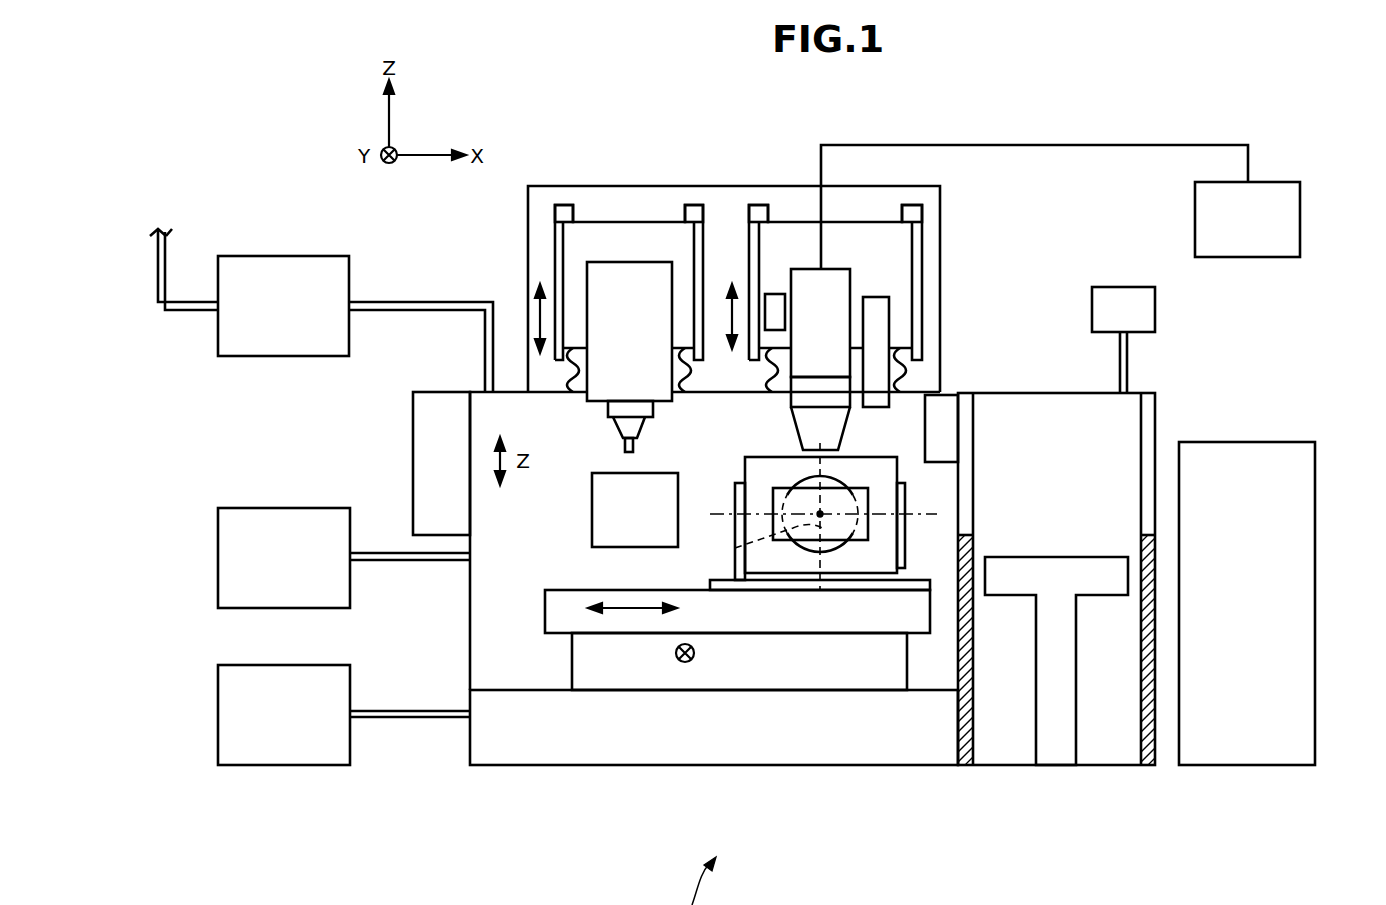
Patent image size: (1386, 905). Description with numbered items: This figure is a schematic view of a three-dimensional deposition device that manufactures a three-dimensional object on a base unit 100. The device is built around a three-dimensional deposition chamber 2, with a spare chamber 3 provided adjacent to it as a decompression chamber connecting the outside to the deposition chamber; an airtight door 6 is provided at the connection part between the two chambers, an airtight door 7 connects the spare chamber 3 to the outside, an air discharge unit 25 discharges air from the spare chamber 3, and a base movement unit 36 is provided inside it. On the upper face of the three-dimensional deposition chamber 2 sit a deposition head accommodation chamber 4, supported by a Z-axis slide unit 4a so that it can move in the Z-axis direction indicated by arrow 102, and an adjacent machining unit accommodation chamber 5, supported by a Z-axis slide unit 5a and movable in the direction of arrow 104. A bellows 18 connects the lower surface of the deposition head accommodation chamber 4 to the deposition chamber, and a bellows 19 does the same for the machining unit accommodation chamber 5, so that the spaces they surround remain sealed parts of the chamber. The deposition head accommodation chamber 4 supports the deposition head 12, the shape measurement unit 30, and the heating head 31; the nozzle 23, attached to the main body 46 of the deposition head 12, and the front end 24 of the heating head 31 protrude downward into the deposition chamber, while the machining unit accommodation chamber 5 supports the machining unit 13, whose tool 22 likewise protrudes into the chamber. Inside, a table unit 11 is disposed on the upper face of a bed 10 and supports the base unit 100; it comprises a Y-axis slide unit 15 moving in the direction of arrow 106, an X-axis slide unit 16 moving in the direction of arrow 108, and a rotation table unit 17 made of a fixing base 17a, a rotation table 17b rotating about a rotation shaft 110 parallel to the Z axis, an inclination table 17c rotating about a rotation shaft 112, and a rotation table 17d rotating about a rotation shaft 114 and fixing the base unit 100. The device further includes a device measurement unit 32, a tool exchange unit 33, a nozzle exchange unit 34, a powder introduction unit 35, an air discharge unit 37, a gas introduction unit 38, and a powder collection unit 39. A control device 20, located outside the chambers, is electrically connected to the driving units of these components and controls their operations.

The three-dimensional deposition chamber 2 is at (518, 673).
The spare chamber 3 is at (1088, 412).
The deposition head accommodation chamber 4 is at (903, 245).
The Z-axis slide unit 4a is at (758, 212).
The machining unit accommodation chamber 5 is at (570, 237).
The Z-axis slide unit 5a is at (565, 212).
The door 6 is at (963, 748).
The airtight door 7 is at (1145, 748).
The bed 10 is at (800, 742).
The table unit 11 is at (724, 643).
The deposition head 12 is at (832, 255).
The machining unit 13 is at (628, 250).
The Y-axis slide unit 15 is at (627, 672).
The X-axis slide unit 16 is at (712, 622).
The rotation table unit 17 is at (793, 615).
The fixing base 17a is at (712, 583).
The rotation table 17b is at (900, 566).
The inclination table 17c is at (853, 465).
The rotation table 17d is at (838, 480).
The bellows 18 is at (910, 357).
The bellows 19 is at (568, 373).
The control device 20 is at (1318, 603).
The tool 22 is at (640, 432).
The nozzle 23 is at (800, 422).
The front end 24 is at (900, 373).
The air discharge unit 25 is at (1092, 313).
The shape measurement unit 30 is at (774, 294).
The heating head 31 is at (877, 308).
The device measurement unit 32 is at (600, 485).
The tool exchange unit 33 is at (429, 401).
The nozzle exchange unit 34 is at (955, 393).
The powder introduction unit 35 is at (1303, 218).
The base movement unit 36 is at (1060, 675).
The air discharge unit 37 is at (222, 340).
The gas introduction unit 38 is at (222, 580).
The powder collection unit 39 is at (222, 722).
The main body 46 is at (849, 262).
The base unit 100 is at (863, 533).
The arrow 102 is at (733, 320).
The arrow 104 is at (537, 313).
The arrow 106 is at (675, 653).
The arrow 108 is at (625, 604).
The rotation shaft 110 is at (735, 548).
The rotation shaft 112 is at (716, 512).
The rotation shaft 114 is at (818, 510).